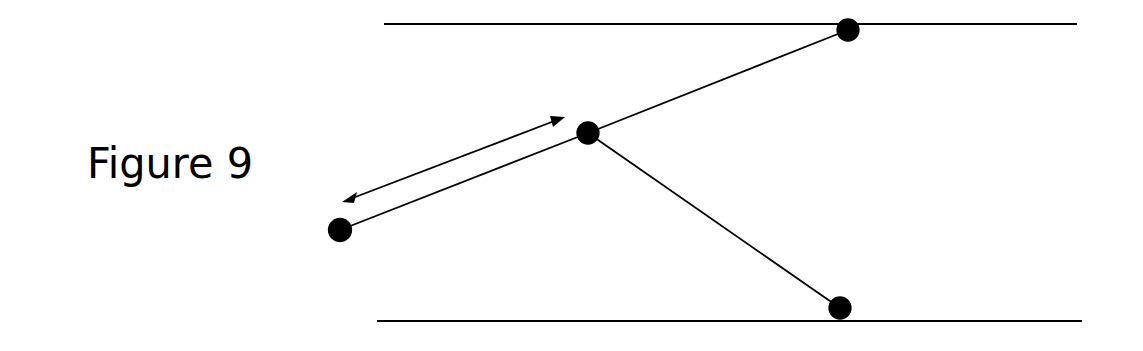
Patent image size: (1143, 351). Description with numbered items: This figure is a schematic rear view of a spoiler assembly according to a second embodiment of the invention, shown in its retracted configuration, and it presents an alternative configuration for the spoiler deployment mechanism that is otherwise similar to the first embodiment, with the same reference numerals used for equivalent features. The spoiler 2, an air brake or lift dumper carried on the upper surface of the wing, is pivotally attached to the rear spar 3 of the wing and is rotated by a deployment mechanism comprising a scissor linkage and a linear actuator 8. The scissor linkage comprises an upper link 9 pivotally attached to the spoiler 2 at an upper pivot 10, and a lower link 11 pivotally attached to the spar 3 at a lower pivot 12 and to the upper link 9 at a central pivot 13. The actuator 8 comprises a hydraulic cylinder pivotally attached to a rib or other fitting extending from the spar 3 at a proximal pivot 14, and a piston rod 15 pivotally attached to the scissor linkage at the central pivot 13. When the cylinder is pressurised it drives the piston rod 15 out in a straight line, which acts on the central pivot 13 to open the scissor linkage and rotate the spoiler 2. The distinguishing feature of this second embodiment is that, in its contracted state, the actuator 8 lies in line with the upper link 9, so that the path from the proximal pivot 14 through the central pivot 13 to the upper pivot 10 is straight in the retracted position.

The spoiler 2 is at (548, 24).
The rear spar 3 is at (1005, 165).
The linear actuator 8 is at (432, 212).
The upper link 9 is at (725, 78).
The upper pivot 10 is at (850, 37).
The lower link 11 is at (720, 230).
The lower pivot 12 is at (852, 305).
The central pivot 13 is at (592, 123).
The proximal pivot 14 is at (333, 243).
The piston rod 15 is at (528, 155).